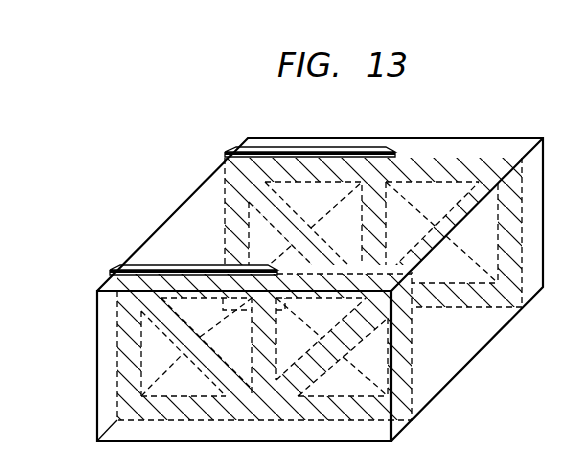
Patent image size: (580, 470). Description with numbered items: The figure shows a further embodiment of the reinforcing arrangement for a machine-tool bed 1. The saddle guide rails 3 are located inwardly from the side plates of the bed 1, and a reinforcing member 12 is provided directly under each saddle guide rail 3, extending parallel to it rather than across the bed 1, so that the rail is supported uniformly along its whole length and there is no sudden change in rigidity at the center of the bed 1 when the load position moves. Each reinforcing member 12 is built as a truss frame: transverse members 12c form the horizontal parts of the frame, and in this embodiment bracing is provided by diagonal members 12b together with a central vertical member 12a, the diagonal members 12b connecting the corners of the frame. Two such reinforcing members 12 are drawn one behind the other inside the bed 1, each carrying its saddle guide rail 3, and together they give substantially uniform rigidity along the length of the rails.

The bed 1 is at (494, 329).
The saddle guide rail 3 is at (358, 147).
The reinforcing member 12 is at (427, 406).
The vertical member 12a is at (122, 353).
The bracing member 12b is at (206, 357).
The transverse member 12c is at (112, 288).